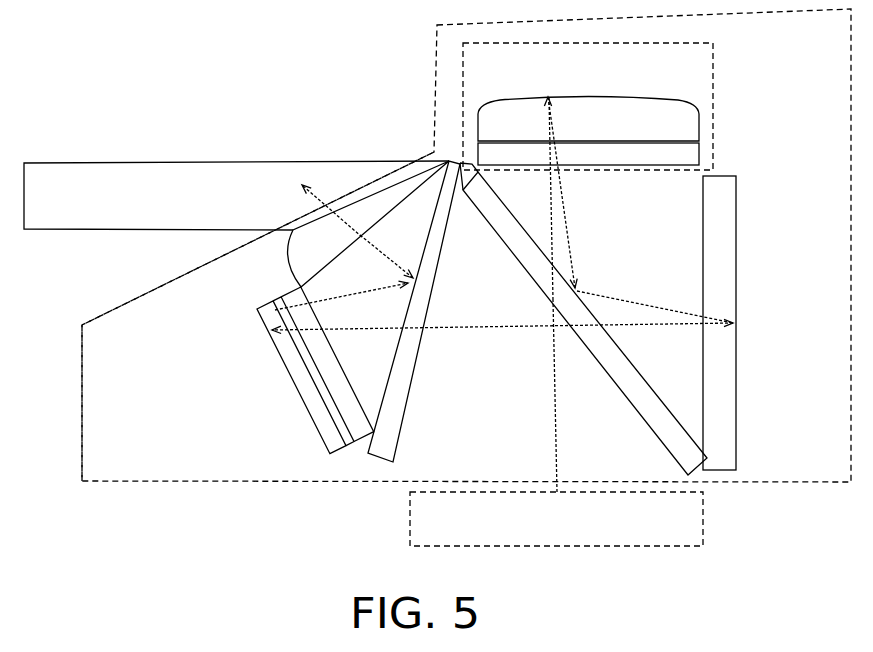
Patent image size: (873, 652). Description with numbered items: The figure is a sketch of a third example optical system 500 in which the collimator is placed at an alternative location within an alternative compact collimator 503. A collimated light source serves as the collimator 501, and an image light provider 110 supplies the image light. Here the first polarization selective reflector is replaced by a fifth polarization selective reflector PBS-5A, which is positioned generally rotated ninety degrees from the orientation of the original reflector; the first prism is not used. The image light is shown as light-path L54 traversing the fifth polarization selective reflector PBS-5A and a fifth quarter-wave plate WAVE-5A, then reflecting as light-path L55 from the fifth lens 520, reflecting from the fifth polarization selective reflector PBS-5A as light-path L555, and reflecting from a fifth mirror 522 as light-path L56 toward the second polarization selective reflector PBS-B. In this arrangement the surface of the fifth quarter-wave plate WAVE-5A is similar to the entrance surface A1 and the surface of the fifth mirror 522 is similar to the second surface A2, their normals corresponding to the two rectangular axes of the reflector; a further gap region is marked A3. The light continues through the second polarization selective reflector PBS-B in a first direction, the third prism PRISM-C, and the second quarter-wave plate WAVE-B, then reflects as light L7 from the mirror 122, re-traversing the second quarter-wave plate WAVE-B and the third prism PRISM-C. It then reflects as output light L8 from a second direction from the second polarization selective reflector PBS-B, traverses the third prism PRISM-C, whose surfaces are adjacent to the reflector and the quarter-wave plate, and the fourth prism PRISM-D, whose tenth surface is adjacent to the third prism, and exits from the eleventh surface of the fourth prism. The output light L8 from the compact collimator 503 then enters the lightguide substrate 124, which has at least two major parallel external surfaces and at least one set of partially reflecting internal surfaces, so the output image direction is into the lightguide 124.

The optical system 500 is at (290, 112).
The collimator 501 is at (588, 106).
The compact collimator 503 is at (258, 316).
The image light provider 110 is at (556, 519).
The lightguide substrate 124 is at (236, 195).
The fifth lens 520 is at (588, 119).
The fifth mirror 522 is at (719, 323).
The mirror 122 is at (301, 377).
The fifth quarter-wave plate WAVE-5A is at (588, 154).
The fifth polarization selective reflector PBS-5A is at (583, 319).
The second polarization selective reflector PBS-B is at (414, 311).
The second quarter-wave plate WAVE-B is at (315, 371).
The third prism PRISM-C is at (328, 364).
The fourth prism PRISM-D is at (368, 224).
The entrance surface A1 is at (600, 165).
The second surface A2 is at (701, 258).
The air gap A3 is at (650, 390).
The light-path L54 is at (554, 396).
The light-path L55 is at (566, 198).
The light-path L555 is at (655, 309).
The light-path L56 is at (502, 328).
The light-path L7 is at (341, 295).
The output light L8 is at (357, 231).